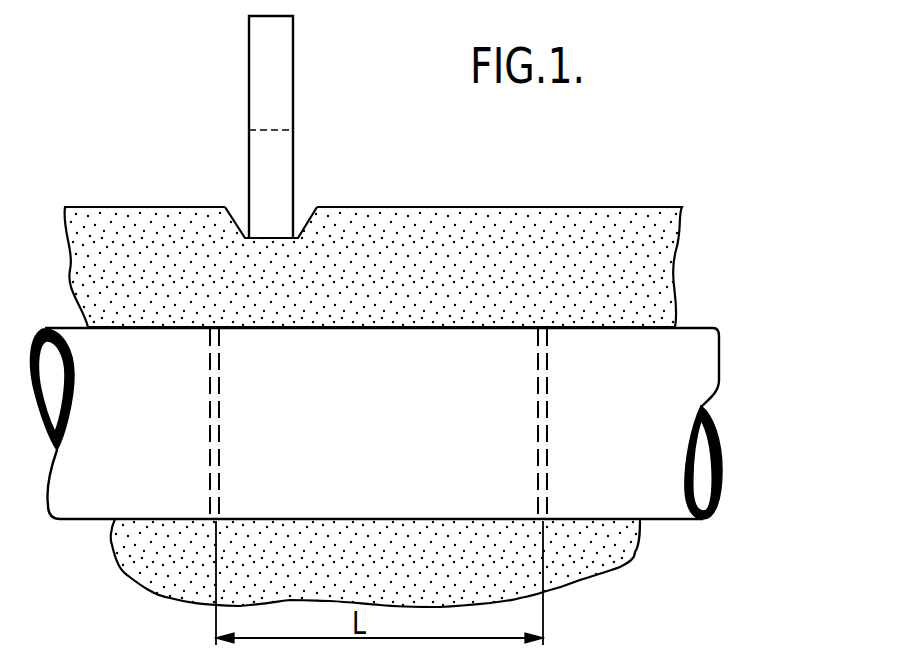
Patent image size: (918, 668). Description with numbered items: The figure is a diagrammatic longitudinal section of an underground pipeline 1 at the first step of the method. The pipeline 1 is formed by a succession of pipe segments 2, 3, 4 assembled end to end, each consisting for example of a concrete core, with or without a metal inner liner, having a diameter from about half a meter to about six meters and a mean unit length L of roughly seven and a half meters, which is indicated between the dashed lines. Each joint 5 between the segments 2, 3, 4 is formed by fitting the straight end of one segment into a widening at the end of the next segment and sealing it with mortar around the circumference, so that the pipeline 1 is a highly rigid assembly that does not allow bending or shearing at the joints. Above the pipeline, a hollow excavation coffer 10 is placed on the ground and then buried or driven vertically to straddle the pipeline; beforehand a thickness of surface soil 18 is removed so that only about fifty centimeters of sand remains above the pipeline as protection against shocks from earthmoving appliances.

The underground pipeline 1 is at (424, 475).
The pipe segment 2 is at (77, 522).
The pipe segment 3 is at (478, 520).
The pipe segment 4 is at (677, 521).
The joint 5 is at (205, 492).
The hollow excavation coffer 10 is at (262, 60).
The removed thickness of soil 18 is at (246, 219).